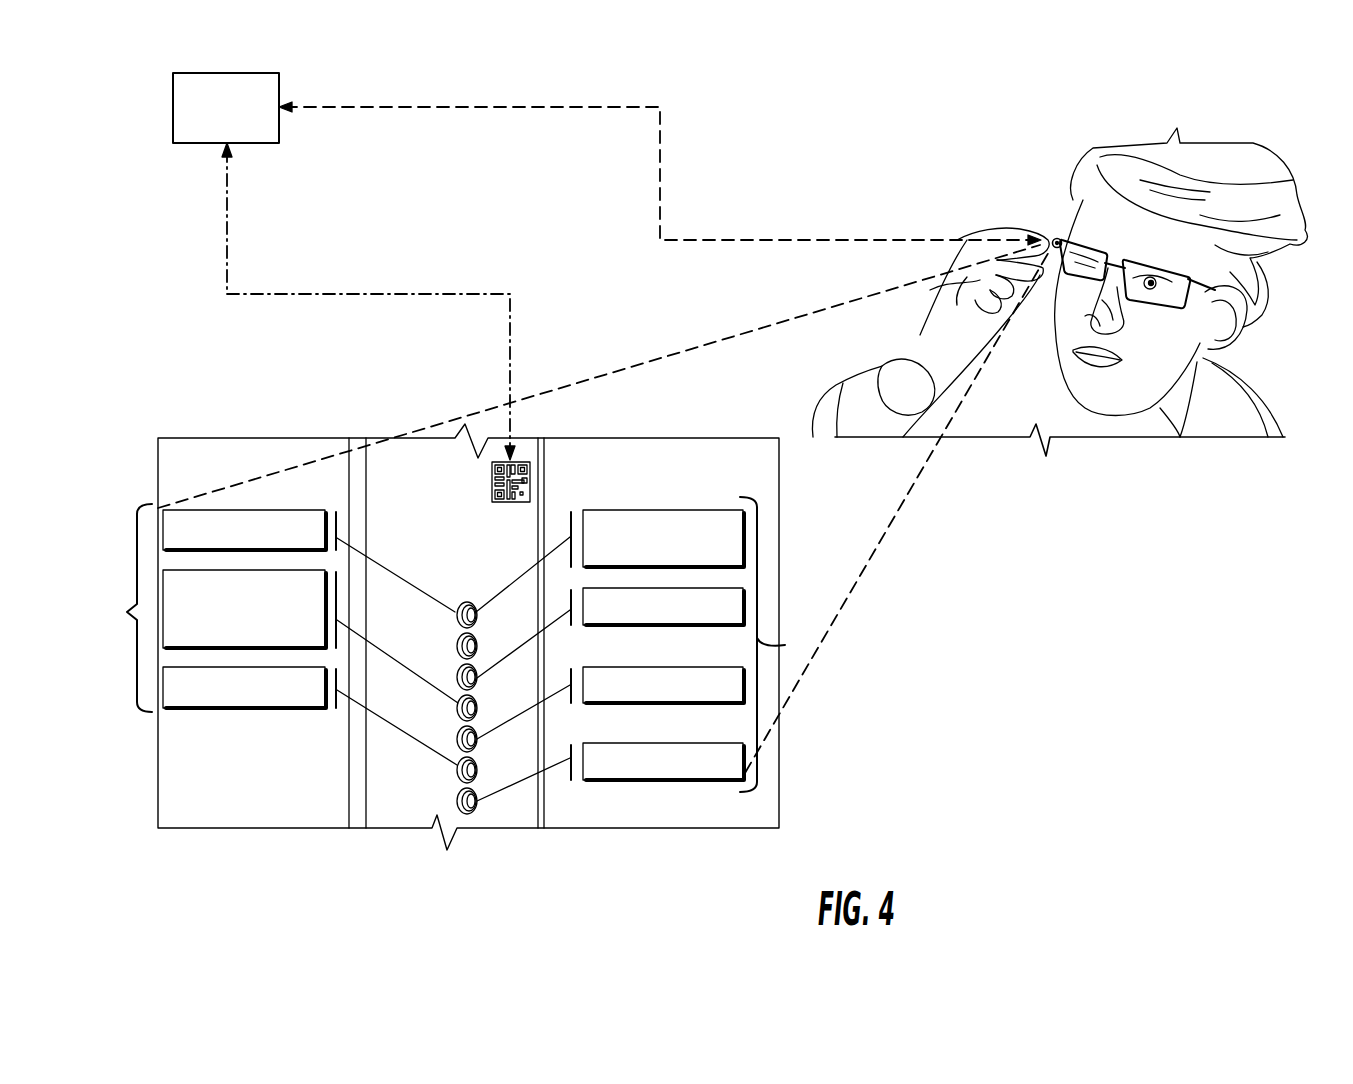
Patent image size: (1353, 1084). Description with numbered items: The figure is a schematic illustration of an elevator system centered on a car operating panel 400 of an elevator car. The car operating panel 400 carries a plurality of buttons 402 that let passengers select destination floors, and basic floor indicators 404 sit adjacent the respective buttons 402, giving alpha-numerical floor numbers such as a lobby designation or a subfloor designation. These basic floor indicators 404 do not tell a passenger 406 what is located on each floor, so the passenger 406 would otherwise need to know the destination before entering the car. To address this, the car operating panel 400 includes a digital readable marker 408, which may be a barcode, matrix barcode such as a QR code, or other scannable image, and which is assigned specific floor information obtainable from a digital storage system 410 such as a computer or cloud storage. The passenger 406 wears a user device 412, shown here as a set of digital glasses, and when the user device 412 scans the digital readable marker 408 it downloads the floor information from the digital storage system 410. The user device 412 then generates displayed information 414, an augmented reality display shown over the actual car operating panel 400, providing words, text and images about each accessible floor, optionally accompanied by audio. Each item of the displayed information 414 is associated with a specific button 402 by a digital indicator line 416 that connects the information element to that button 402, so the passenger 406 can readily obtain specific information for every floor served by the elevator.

The car operating panel 400 is at (447, 485).
The buttons 402 is at (475, 822).
The basic floor indicators 404 is at (425, 745).
The passenger 406 is at (1040, 405).
The digital readable marker 408 is at (531, 482).
The digital storage system 410 is at (243, 123).
The user device 412 is at (1052, 240).
The displayed information 414 is at (455, 644).
The digital indicator line 416 is at (375, 738).